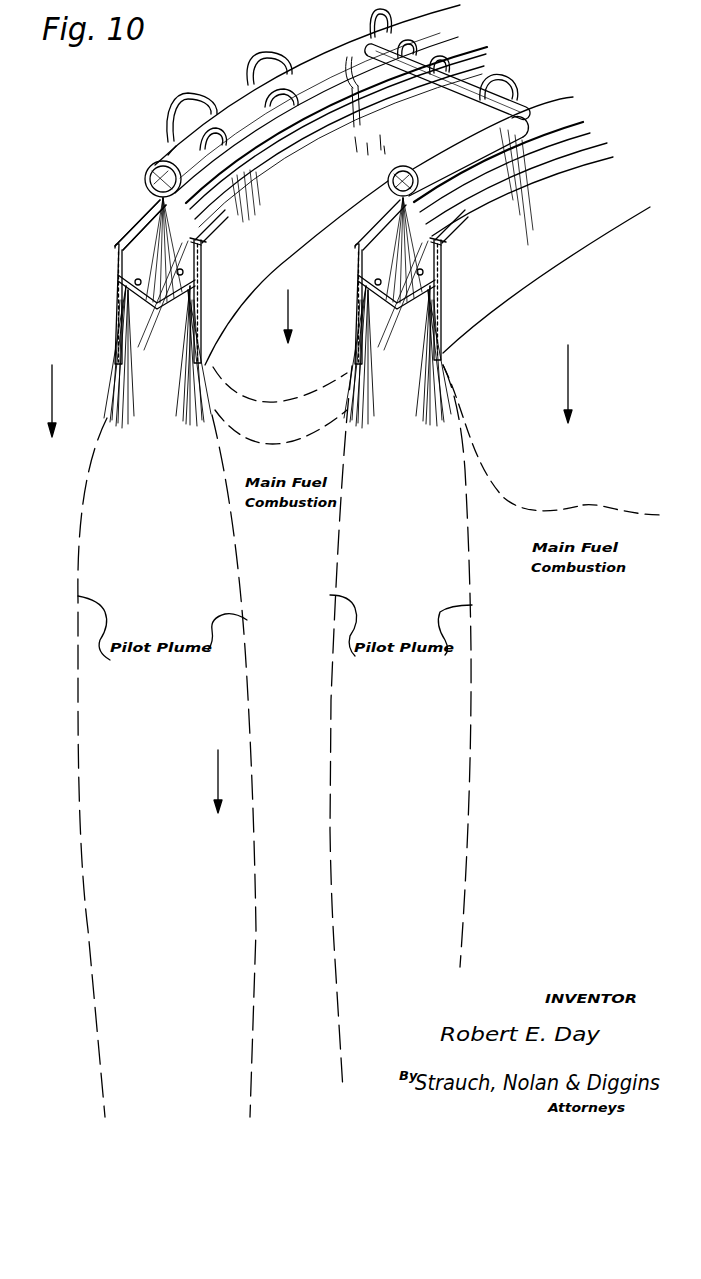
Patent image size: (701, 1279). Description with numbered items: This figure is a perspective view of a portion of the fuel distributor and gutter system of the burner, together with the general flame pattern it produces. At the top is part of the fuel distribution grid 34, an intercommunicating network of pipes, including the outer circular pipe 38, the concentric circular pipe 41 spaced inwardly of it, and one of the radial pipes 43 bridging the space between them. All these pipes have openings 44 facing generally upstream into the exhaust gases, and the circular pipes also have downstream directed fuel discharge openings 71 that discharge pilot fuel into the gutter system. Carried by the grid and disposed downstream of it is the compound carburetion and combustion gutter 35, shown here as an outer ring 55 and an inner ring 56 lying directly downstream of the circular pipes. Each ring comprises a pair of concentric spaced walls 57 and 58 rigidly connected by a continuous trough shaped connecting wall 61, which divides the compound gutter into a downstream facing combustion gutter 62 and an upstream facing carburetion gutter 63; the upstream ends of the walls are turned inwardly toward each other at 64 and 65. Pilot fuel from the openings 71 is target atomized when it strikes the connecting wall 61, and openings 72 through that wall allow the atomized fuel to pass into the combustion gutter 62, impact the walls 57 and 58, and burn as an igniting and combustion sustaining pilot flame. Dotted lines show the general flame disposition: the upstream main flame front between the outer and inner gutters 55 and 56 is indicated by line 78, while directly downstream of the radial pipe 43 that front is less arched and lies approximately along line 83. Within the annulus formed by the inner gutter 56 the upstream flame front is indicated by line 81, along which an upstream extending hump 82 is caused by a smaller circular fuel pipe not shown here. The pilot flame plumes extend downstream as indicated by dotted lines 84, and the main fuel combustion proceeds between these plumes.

The fuel distribution grid 34 is at (162, 131).
The outer circular pipe 38 is at (165, 152).
The circular pipe 41 is at (418, 143).
The radial pipe 43 is at (408, 90).
The openings 44 is at (246, 110).
The downstream directed fuel discharge openings 71 is at (146, 184).
The inwardly turned end of wall 58 65 is at (137, 226).
The inwardly turned end of wall 57 64 is at (190, 232).
The carburetion gutter 63 is at (204, 243).
The outer ring 55 is at (258, 232).
The inner ring 56 is at (518, 268).
The openings 72 is at (130, 280).
The compound carburetion and combustion gutter 35 is at (108, 281).
The wall 57 is at (113, 323).
The combustion gutter 62 is at (202, 293).
The connecting wall 61 is at (162, 315).
The wall 58 is at (192, 328).
The flame front line 83 is at (298, 362).
The flame front line 78 is at (290, 444).
The flame front line 81 is at (541, 499).
The hump 82 is at (611, 501).
The pilot flame plumes 84 is at (78, 655).